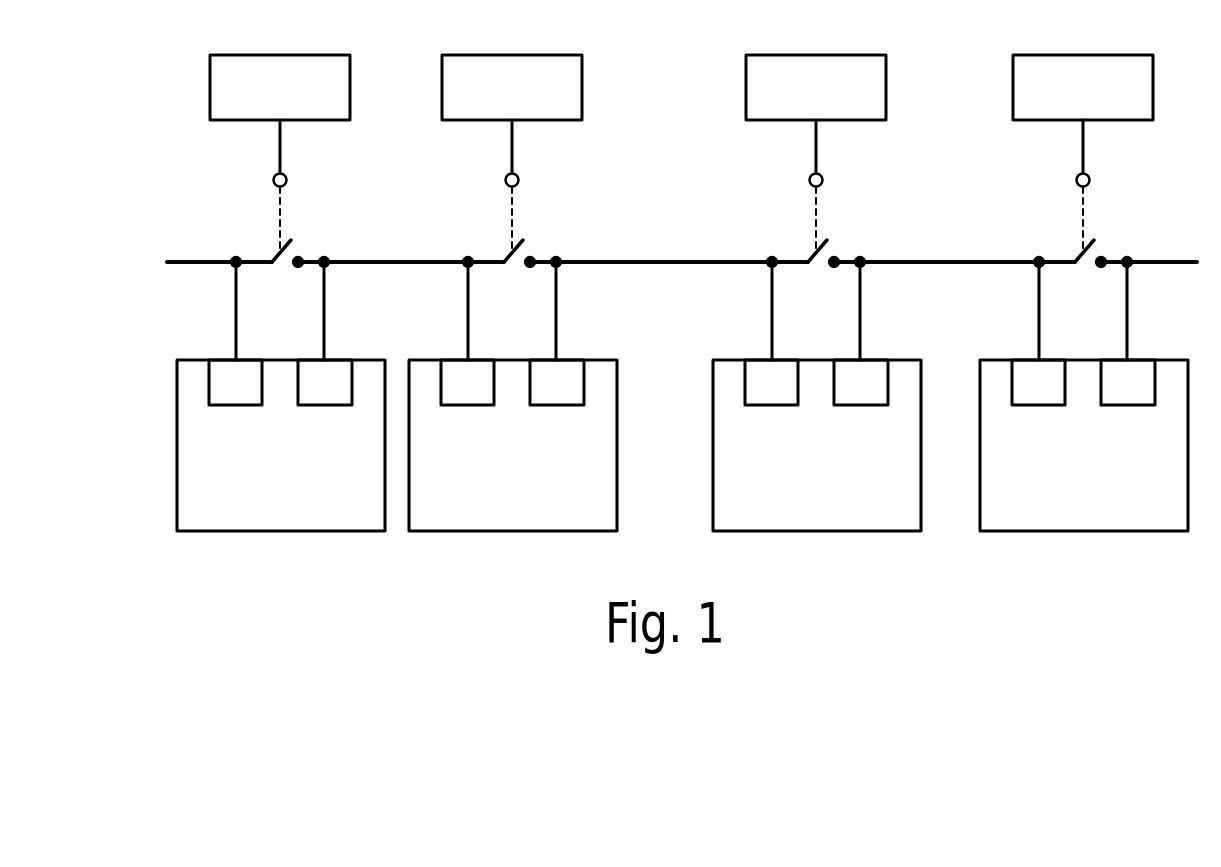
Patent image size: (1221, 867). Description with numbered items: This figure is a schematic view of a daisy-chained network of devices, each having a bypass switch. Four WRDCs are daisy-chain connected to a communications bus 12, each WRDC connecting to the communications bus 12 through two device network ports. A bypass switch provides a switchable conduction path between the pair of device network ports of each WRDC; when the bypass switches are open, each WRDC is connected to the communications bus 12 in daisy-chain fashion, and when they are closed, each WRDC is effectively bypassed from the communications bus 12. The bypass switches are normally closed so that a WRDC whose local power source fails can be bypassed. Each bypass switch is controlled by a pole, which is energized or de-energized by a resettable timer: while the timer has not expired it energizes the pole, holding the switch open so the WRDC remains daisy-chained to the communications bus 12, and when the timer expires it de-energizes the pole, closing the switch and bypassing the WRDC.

The communications bus 12 is at (653, 234).